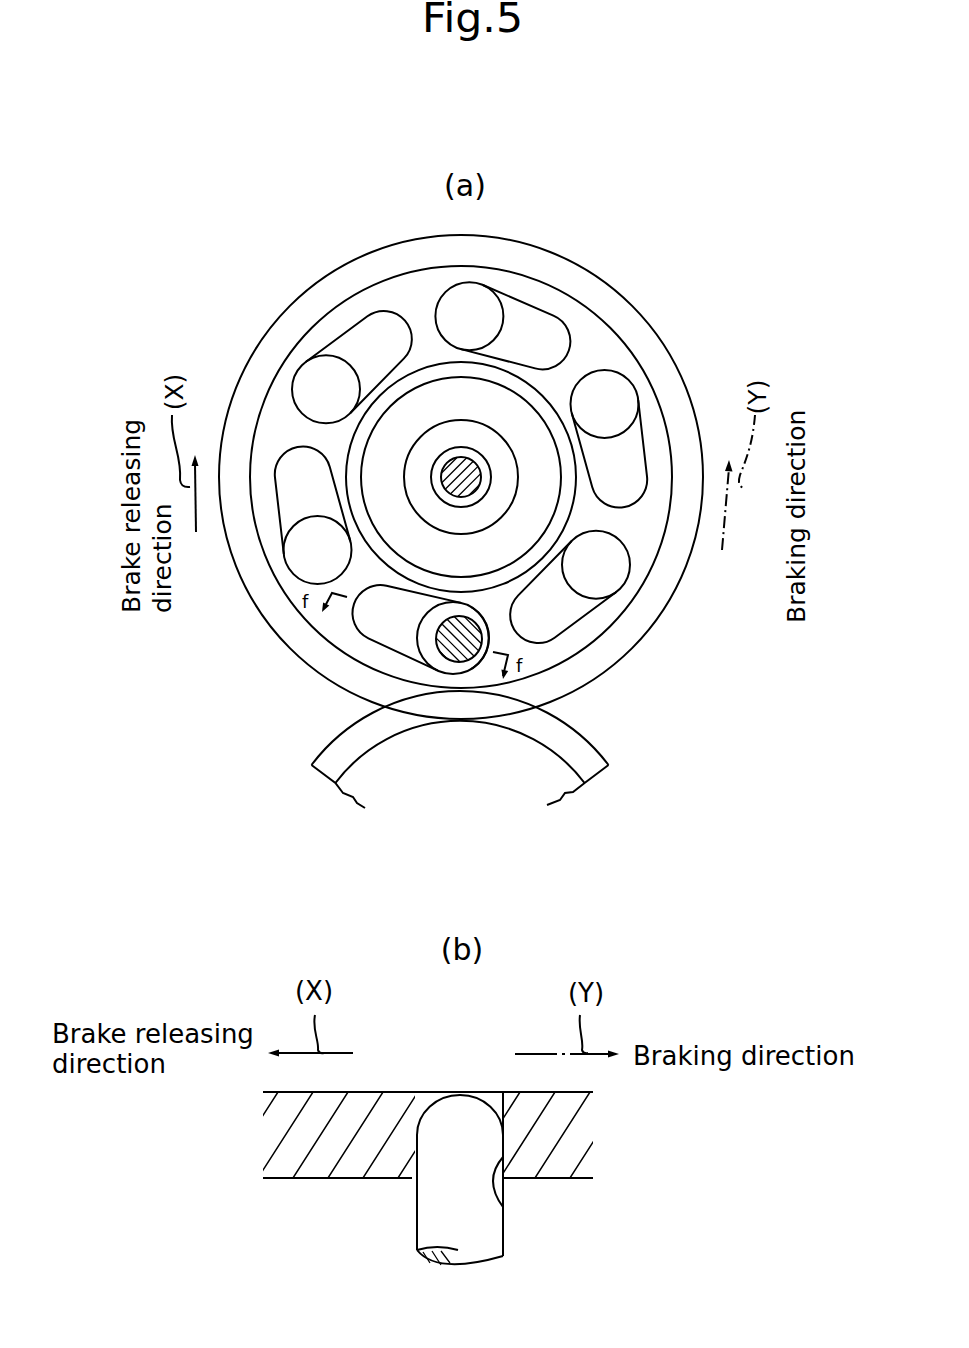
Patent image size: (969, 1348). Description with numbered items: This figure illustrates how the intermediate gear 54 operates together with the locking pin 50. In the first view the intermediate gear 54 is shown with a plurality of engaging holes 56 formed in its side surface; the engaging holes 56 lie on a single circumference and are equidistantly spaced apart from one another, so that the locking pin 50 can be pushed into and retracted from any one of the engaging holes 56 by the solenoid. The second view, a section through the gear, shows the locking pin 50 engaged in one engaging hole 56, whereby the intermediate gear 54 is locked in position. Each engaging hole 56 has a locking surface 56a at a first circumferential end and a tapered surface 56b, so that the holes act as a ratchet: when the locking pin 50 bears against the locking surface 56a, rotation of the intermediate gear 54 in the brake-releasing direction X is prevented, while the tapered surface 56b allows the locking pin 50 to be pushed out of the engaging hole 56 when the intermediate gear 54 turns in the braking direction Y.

The locking pin 50 is at (457, 662).
The intermediate gear 54 is at (353, 275).
The engaging hole 56 is at (433, 660).
The locking surface 56a is at (479, 613).
The tapered surface 56b is at (371, 614).